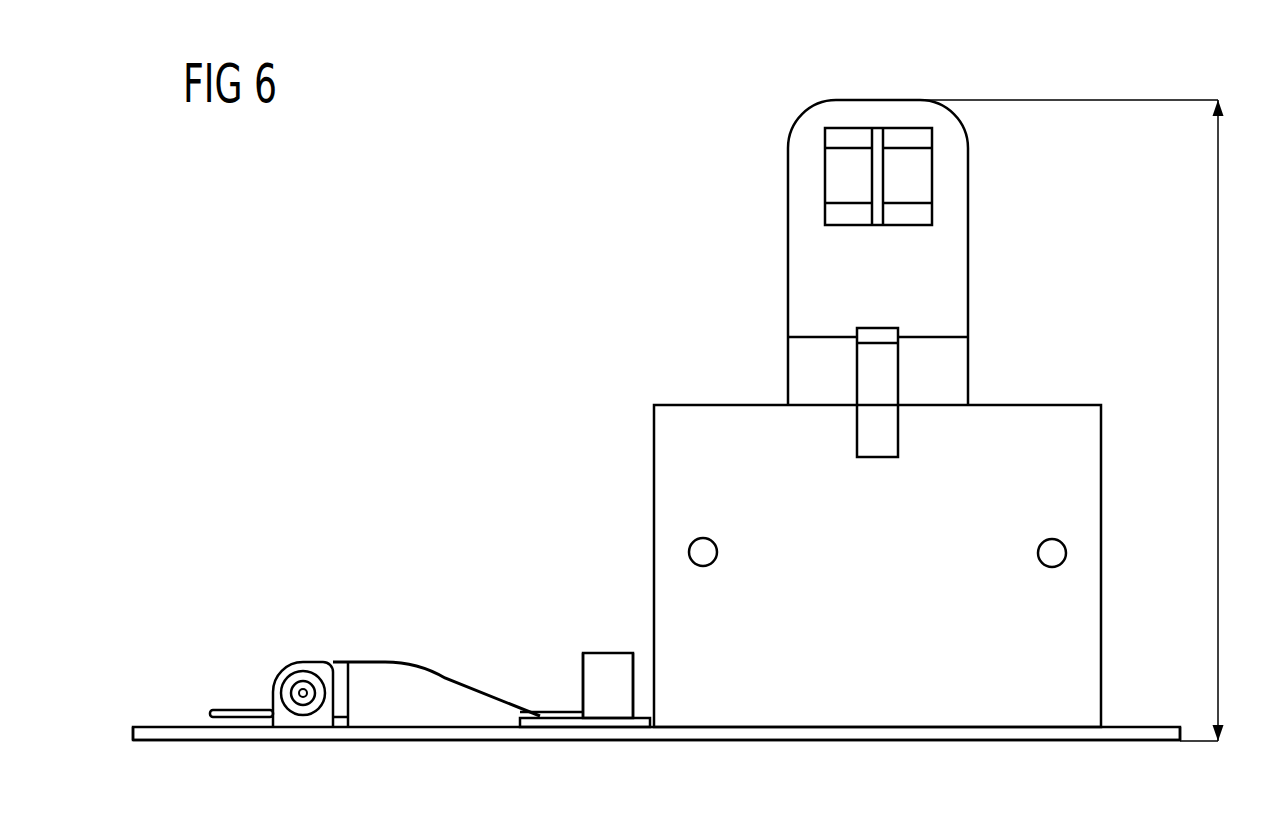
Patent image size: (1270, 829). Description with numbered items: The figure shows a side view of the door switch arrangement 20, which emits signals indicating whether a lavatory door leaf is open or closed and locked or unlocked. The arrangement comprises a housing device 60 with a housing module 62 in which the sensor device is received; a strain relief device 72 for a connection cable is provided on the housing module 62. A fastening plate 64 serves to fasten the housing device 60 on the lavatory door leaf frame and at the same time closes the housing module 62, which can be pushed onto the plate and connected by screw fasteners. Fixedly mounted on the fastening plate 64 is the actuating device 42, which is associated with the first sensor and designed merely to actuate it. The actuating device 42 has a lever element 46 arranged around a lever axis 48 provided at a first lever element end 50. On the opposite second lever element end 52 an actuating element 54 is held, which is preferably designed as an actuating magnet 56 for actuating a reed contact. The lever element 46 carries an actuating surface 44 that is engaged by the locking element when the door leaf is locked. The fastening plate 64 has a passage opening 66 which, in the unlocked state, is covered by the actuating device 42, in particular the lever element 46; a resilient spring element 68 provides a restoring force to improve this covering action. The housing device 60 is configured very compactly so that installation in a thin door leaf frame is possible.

The door switch arrangement 20 is at (368, 230).
The actuating device 42 is at (421, 664).
The actuating surface 44 is at (414, 760).
The lever element 46 is at (412, 684).
The lever axis 48 is at (303, 693).
The first lever element end 50 is at (250, 673).
The second lever element end 52 is at (591, 622).
The actuating element 54 is at (618, 660).
The actuating magnet 56 is at (583, 668).
The housing device 60 is at (650, 277).
The housing module 62 is at (1042, 420).
The fastening plate 64 is at (148, 728).
The passage opening 66 is at (456, 760).
The resilient spring element 68 is at (222, 718).
The strain relief device 72 is at (844, 122).